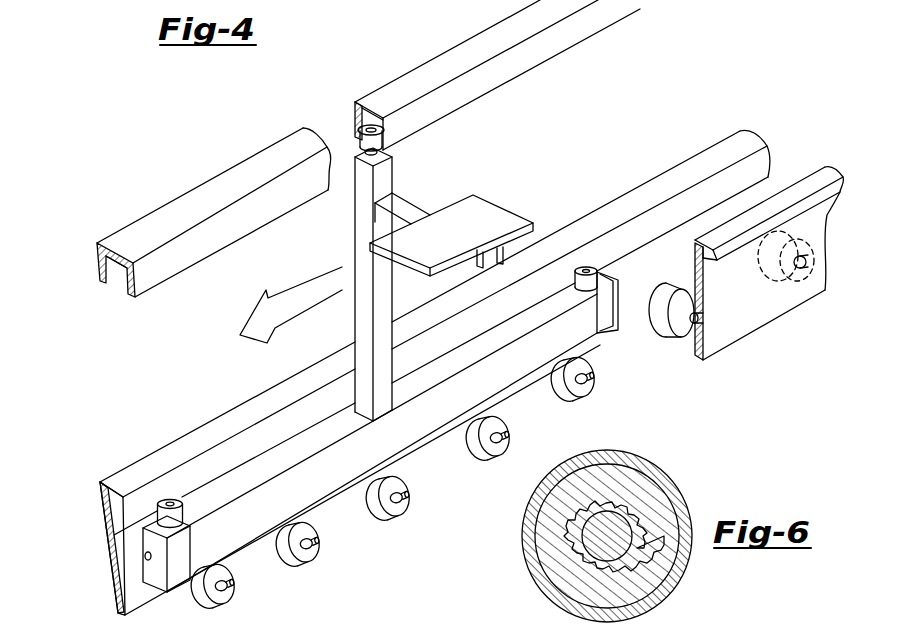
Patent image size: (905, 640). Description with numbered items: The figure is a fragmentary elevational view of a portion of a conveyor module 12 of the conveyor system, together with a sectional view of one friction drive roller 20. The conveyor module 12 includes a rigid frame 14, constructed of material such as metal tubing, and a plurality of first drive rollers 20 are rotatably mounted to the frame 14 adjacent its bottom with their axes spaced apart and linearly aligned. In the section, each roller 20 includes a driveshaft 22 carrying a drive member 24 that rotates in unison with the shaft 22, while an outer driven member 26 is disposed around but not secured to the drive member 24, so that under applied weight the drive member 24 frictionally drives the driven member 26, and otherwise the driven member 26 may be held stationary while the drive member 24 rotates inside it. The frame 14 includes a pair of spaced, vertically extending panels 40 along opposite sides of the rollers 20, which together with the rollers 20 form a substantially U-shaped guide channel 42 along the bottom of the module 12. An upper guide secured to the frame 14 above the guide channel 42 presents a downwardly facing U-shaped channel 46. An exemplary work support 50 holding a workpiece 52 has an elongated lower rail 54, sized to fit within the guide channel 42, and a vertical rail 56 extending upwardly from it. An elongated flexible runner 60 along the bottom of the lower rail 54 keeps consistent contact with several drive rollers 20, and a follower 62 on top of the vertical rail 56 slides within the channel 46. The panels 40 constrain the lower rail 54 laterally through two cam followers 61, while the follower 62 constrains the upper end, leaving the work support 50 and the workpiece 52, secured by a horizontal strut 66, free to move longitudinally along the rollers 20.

In FIG. 4, the conveyor module 12 is at (107, 546).
In FIG. 4, the frame 14 is at (206, 180).
In FIG. 4, the first drive roller 20 is at (490, 450).
In FIG. 6, the first drive roller 20 is at (691, 486).
In FIG. 6, the driveshaft 22 is at (598, 547).
In FIG. 6, the drive member 24 is at (657, 575).
In FIG. 6, the driven member 26 is at (633, 460).
In FIG. 4, the panel 40 is at (230, 423).
In FIG. 4, the guide channel 42 is at (748, 188).
In FIG. 4, the U-shaped channel 46 is at (115, 268).
In FIG. 4, the work support 50 is at (348, 308).
In FIG. 4, the workpiece 52 is at (493, 220).
In FIG. 4, the lower rail 54 is at (220, 523).
In FIG. 4, the vertical rail 56 is at (357, 235).
In FIG. 4, the flexible runner 60 is at (333, 500).
In FIG. 4, the cam follower 61 is at (167, 500).
In FIG. 4, the follower 62 is at (362, 144).
In FIG. 4, the horizontal strut 66 is at (407, 205).